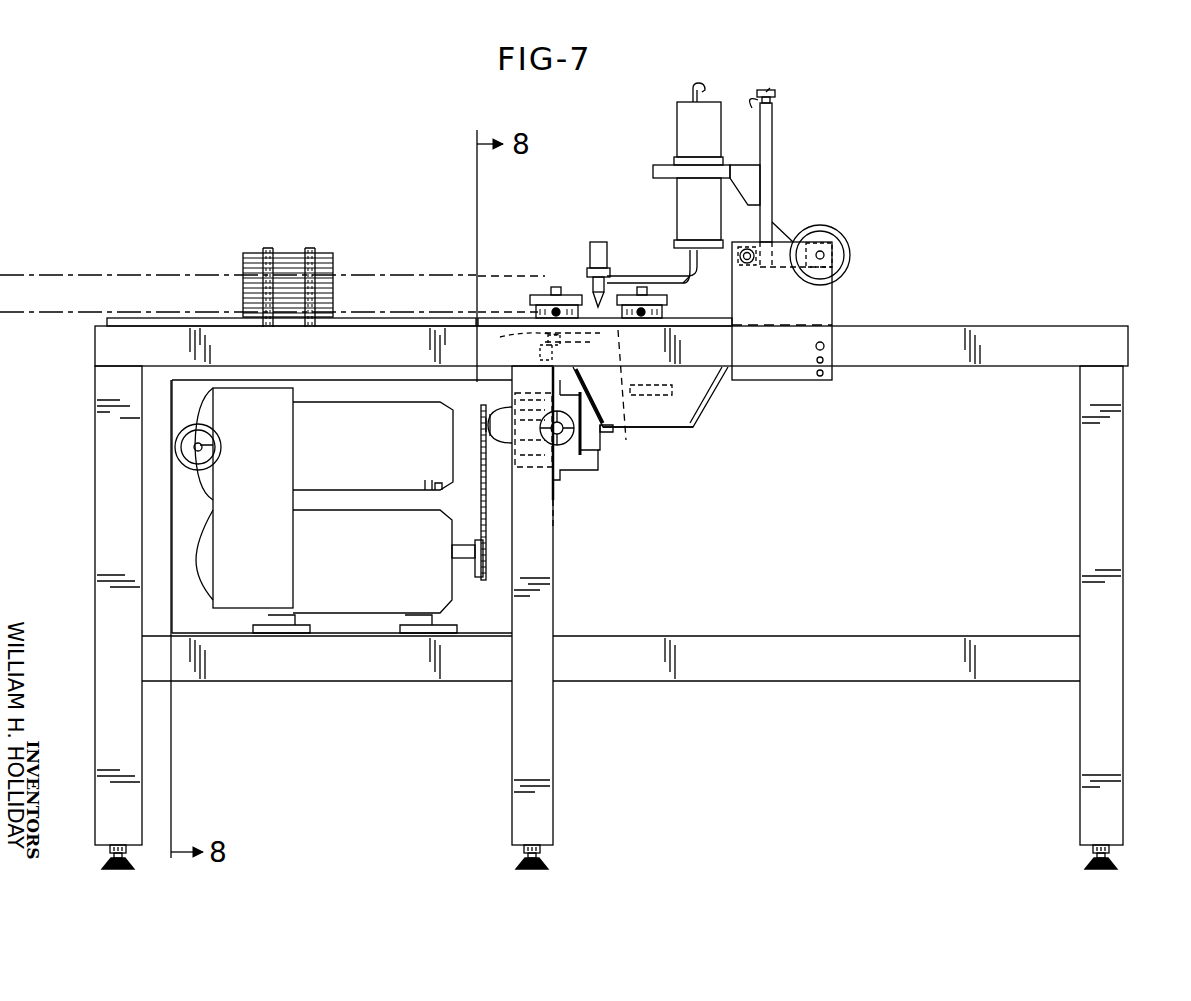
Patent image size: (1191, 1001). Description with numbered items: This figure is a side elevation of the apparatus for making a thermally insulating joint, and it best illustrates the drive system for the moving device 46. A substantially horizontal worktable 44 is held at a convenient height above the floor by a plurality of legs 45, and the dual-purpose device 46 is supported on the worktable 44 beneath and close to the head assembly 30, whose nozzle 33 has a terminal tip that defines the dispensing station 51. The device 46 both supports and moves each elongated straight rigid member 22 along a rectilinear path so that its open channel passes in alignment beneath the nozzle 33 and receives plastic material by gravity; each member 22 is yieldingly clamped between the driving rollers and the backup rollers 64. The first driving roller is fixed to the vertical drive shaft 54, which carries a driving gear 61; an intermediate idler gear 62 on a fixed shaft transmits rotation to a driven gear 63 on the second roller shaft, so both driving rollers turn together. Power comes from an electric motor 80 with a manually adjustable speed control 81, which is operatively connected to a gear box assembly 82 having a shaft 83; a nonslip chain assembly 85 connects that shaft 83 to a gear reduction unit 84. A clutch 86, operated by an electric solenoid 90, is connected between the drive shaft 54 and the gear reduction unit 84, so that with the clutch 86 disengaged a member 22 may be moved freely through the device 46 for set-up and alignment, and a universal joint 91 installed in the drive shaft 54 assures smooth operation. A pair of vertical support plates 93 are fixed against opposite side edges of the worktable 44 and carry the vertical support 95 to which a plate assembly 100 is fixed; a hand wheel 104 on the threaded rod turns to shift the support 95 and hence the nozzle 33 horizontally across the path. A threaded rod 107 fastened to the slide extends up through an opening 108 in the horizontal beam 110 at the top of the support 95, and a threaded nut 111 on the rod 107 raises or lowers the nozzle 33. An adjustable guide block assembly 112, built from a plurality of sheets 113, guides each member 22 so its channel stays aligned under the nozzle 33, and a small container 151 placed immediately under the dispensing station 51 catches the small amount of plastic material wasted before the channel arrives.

The elongated straight rigid member 22 is at (421, 275).
The head assembly 30 is at (648, 208).
The nozzle 33 is at (610, 290).
The worktable 44 is at (676, 321).
The legs 45 is at (97, 722).
The dual-purpose device 46 is at (516, 299).
The dispensing station 51 is at (583, 284).
The vertical shaft 54 is at (556, 330).
The driving gear 61 is at (520, 350).
The intermediate idler gear 62 is at (604, 432).
The driven gear 63 is at (723, 381).
The backup roller 64 is at (541, 295).
The electric motor 80 is at (392, 456).
The manually adjustable speed control 81 is at (223, 443).
The gear box assembly 82 is at (382, 581).
The shaft 83 is at (463, 560).
The gear reduction unit 84 is at (572, 450).
The nonslip chain assembly 85 is at (488, 523).
The clutch 86 is at (516, 383).
The electric solenoid 90 is at (580, 448).
The universal joint 91 is at (550, 356).
The vertical support plates 93 is at (822, 305).
The vertical support 95 is at (773, 143).
The plate assembly 100 is at (795, 202).
The hand wheel 104 is at (843, 235).
The threaded rod 107 is at (775, 99).
The opening 108 is at (772, 105).
The horizontal beam 110 is at (760, 99).
The threaded nut 111 is at (768, 96).
The adjustable guide block assembly 112 is at (294, 216).
The sheets 113 is at (243, 284).
The small container 151 is at (675, 413).